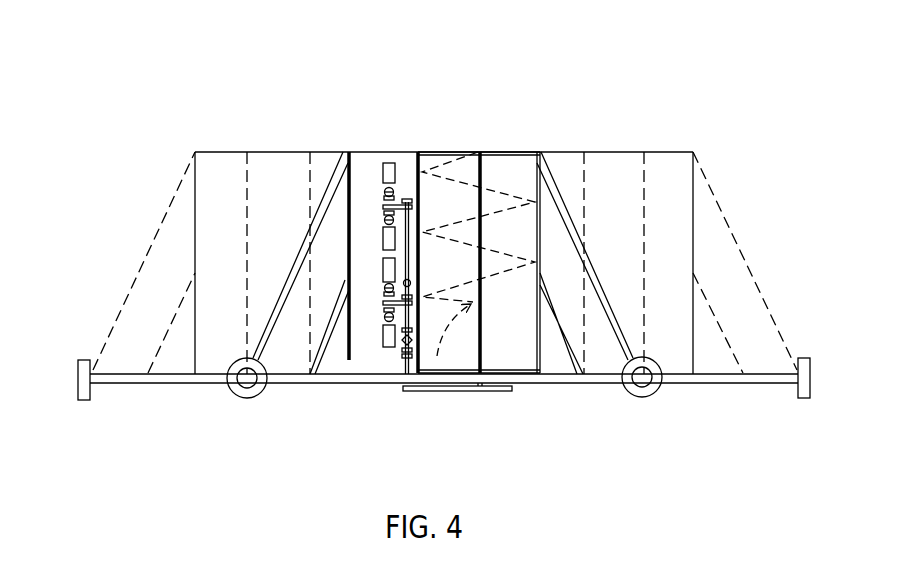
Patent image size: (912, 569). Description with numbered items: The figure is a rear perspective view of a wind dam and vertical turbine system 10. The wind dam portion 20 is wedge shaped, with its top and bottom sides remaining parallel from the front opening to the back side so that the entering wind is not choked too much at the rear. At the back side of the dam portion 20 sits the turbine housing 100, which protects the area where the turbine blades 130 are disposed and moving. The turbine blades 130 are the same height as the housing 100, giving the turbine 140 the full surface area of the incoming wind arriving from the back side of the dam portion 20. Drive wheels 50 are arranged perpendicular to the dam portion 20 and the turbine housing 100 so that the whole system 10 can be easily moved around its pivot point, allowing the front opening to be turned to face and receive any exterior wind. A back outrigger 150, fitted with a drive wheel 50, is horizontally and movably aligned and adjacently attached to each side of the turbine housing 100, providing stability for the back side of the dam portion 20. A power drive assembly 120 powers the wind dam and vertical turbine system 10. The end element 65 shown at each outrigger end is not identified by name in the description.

The wind dam and vertical turbine system 10 is at (627, 80).
The wind dam portion 20 is at (290, 247).
The drive wheels 50 is at (255, 392).
The end stop 65 is at (78, 362).
The turbine housing 100 is at (523, 364).
The power drive assembly 120 is at (393, 159).
The turbine blades 130 is at (495, 190).
The turbine 140 is at (435, 363).
The back outrigger 150 is at (347, 383).